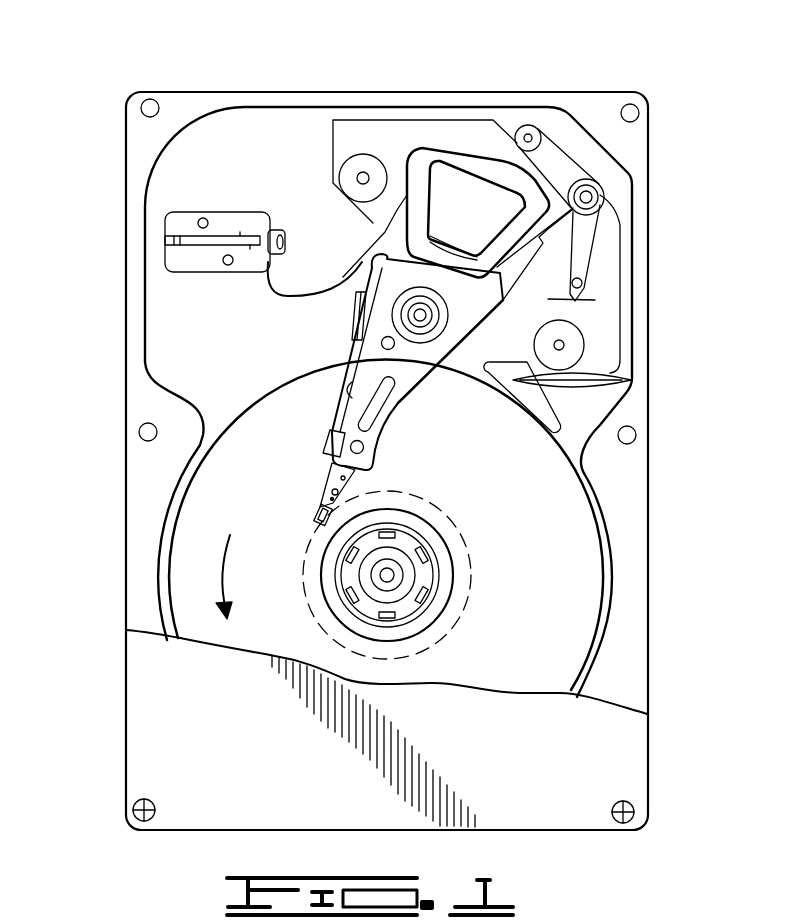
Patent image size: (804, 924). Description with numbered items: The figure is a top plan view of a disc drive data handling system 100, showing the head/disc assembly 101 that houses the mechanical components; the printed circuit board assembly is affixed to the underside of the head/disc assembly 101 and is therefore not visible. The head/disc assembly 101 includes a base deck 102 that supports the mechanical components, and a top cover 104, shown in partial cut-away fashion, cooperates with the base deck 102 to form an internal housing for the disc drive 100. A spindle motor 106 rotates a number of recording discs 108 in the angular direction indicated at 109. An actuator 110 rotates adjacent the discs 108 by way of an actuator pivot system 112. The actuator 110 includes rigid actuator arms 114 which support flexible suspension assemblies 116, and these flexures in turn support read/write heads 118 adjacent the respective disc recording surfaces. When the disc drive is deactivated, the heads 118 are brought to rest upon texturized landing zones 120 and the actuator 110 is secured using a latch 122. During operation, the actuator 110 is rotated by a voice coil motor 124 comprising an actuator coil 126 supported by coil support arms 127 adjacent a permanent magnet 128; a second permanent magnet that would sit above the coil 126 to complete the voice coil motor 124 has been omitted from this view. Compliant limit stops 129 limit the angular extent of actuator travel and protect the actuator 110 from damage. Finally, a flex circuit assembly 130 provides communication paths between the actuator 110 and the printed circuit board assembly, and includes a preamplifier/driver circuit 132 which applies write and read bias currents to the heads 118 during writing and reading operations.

The disc drive data handling system 100 is at (138, 58).
The head/disc assembly 101 is at (196, 162).
The base deck 102 is at (172, 318).
The top cover 104 is at (165, 710).
The spindle motor 106 is at (418, 560).
The recording discs 108 is at (583, 583).
The angular direction 109 is at (233, 557).
The actuator 110 is at (403, 370).
The actuator pivot system 112 is at (433, 315).
The actuator arms 114 is at (385, 420).
The flexible suspension assemblies 116 is at (338, 478).
The read/write heads 118 is at (318, 503).
The texturized landing zones 120 is at (452, 627).
The latch 122 is at (590, 242).
The voice coil motor 124 is at (475, 125).
The actuator coil 126 is at (434, 150).
The coil support arms 127 is at (405, 165).
The permanent magnet 128 is at (502, 304).
The compliant limit stops 129 is at (353, 168).
The flex circuit assembly 130 is at (277, 304).
The preamplifier/driver circuit 132 is at (352, 314).